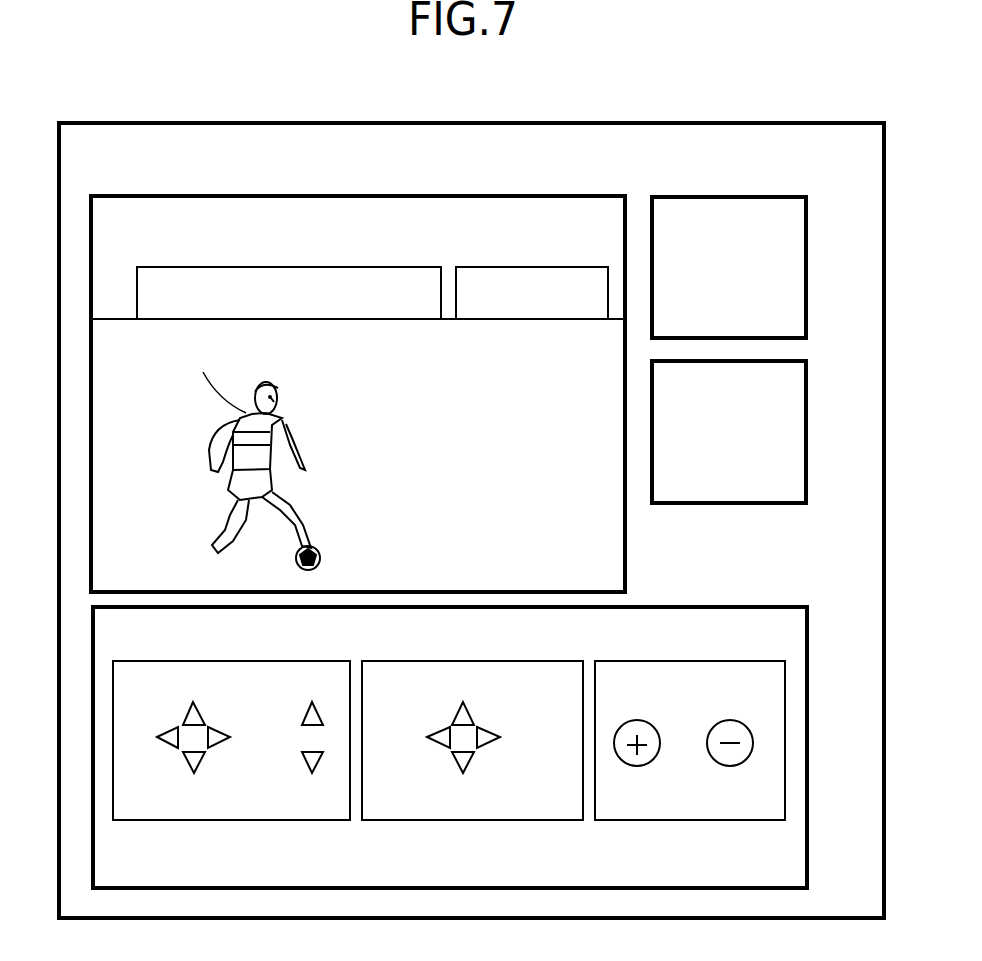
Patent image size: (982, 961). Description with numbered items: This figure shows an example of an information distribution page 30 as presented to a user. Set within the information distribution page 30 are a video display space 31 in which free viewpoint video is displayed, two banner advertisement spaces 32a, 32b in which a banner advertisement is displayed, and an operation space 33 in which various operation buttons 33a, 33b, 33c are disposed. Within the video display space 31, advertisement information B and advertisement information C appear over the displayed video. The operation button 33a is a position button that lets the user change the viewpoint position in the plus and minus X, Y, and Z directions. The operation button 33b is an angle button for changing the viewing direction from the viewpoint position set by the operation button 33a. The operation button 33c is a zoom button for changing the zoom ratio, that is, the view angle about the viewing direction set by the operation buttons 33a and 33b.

The information distribution page 30 is at (688, 121).
The video display space 31 is at (365, 194).
The banner advertisement space 32a is at (807, 252).
The banner advertisement space 32b is at (807, 417).
The operation space 33 is at (807, 660).
The operation button 33a is at (265, 661).
The operation button 33b is at (486, 661).
The operation button 33c is at (717, 661).